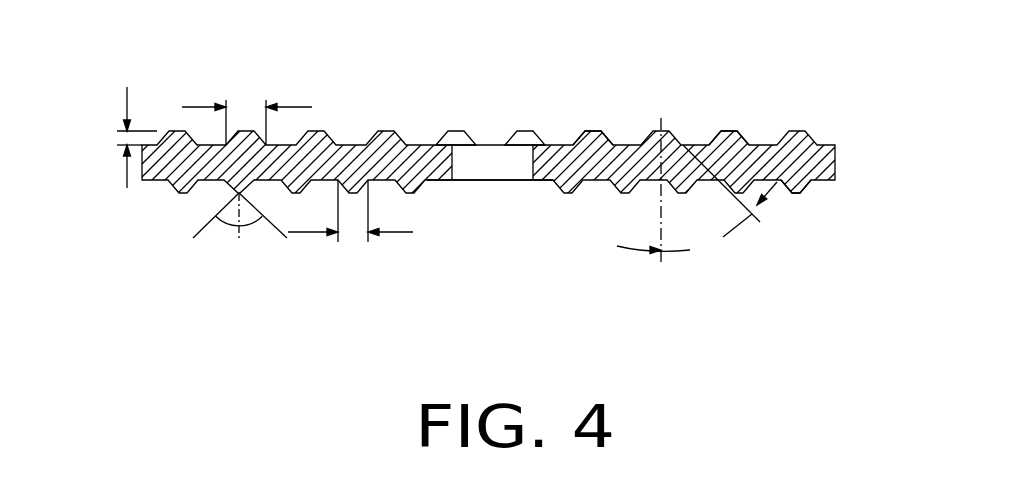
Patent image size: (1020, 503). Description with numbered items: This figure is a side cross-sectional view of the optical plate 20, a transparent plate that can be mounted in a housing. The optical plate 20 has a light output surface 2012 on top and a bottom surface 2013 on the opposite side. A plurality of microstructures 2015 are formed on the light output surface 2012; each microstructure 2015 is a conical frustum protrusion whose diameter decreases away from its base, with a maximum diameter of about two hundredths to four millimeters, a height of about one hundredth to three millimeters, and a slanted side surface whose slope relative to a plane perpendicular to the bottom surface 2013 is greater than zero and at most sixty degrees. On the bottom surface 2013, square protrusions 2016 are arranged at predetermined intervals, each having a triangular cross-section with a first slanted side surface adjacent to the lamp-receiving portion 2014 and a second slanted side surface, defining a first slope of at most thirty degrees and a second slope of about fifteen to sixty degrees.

The optical plate 20 is at (148, 60).
The light output surface 2012 is at (558, 145).
The bottom surface 2013 is at (427, 183).
The lamp-receiving portion 2014 is at (477, 152).
The microstructure 2015 is at (727, 137).
The square protrusion 2016 is at (795, 195).